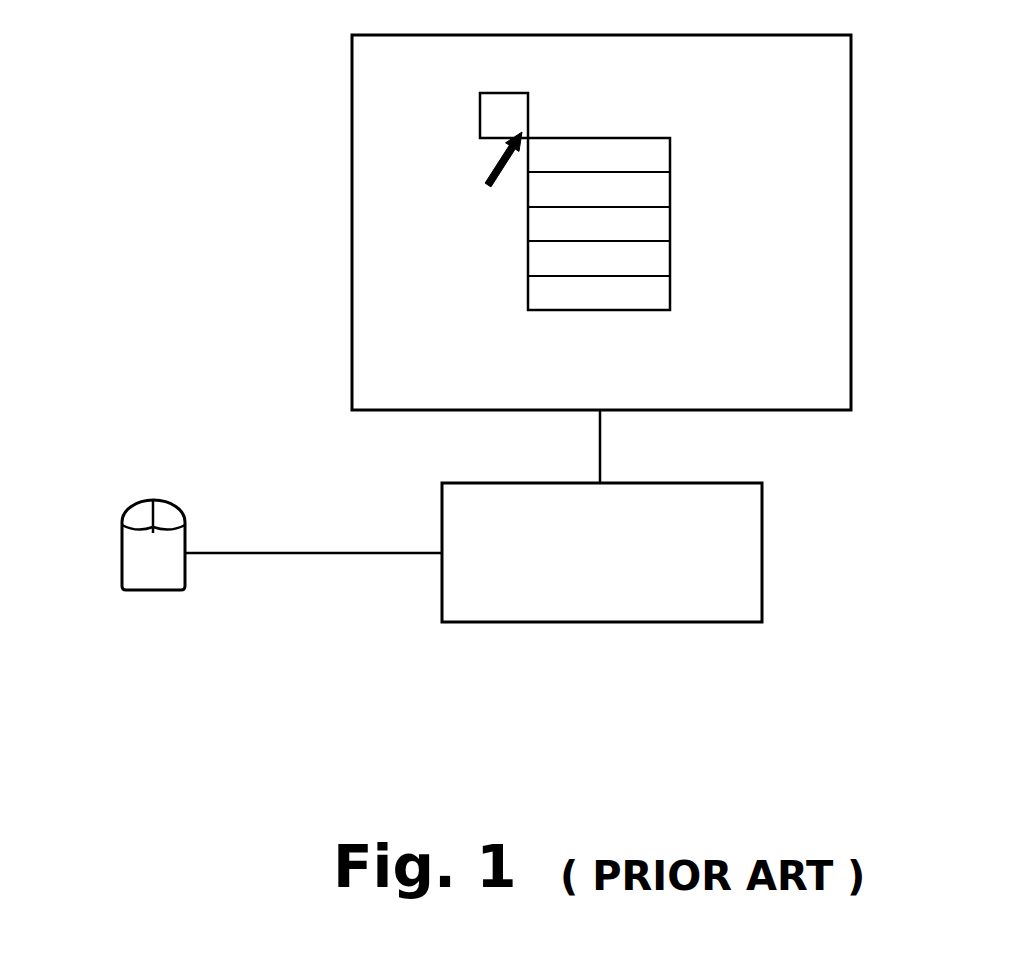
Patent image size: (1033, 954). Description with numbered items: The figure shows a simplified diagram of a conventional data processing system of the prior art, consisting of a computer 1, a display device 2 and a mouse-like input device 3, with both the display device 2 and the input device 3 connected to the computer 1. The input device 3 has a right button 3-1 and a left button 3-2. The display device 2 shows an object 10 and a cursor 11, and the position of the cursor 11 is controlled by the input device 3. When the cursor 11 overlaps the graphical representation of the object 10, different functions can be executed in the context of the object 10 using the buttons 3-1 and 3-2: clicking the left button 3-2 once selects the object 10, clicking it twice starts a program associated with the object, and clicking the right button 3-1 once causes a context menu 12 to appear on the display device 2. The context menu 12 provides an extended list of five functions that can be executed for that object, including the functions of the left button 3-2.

The computer 1 is at (762, 517).
The display device 2 is at (851, 66).
The input device 3 is at (185, 575).
The right button 3-1 is at (178, 512).
The left button 3-2 is at (130, 513).
The object 10 is at (505, 93).
The cursor 11 is at (483, 173).
The context menu 12 is at (643, 138).